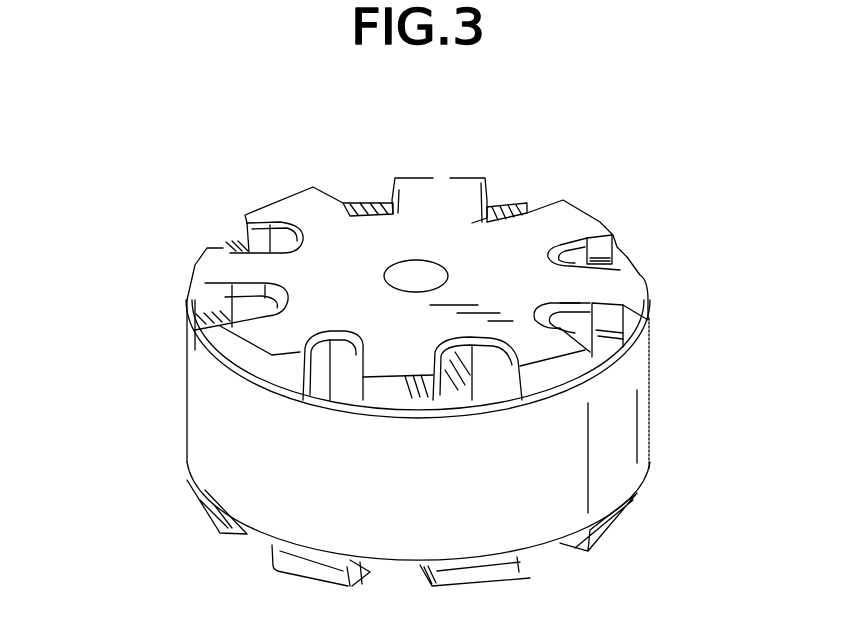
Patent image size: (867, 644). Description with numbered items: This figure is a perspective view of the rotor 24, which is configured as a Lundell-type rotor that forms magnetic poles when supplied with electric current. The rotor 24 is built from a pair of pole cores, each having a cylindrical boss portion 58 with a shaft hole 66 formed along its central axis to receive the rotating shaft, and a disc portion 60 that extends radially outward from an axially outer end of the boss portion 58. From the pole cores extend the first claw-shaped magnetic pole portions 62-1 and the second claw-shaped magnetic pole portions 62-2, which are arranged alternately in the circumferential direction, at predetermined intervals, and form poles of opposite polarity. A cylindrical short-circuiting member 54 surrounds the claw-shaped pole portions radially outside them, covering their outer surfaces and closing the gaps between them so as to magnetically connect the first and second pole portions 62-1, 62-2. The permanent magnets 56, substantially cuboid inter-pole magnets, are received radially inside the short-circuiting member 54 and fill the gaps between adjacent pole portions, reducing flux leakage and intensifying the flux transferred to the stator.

The rotor 24 is at (193, 229).
The short-circuiting member 54 is at (240, 433).
The permanent magnets 56 is at (452, 398).
The boss portion 58 is at (462, 274).
The disc portion 60 is at (580, 290).
The first claw-shaped magnetic pole portions 62-1 is at (567, 370).
The second claw-shaped magnetic pole portions 62-2 is at (505, 562).
The shaft hole 66 is at (417, 277).